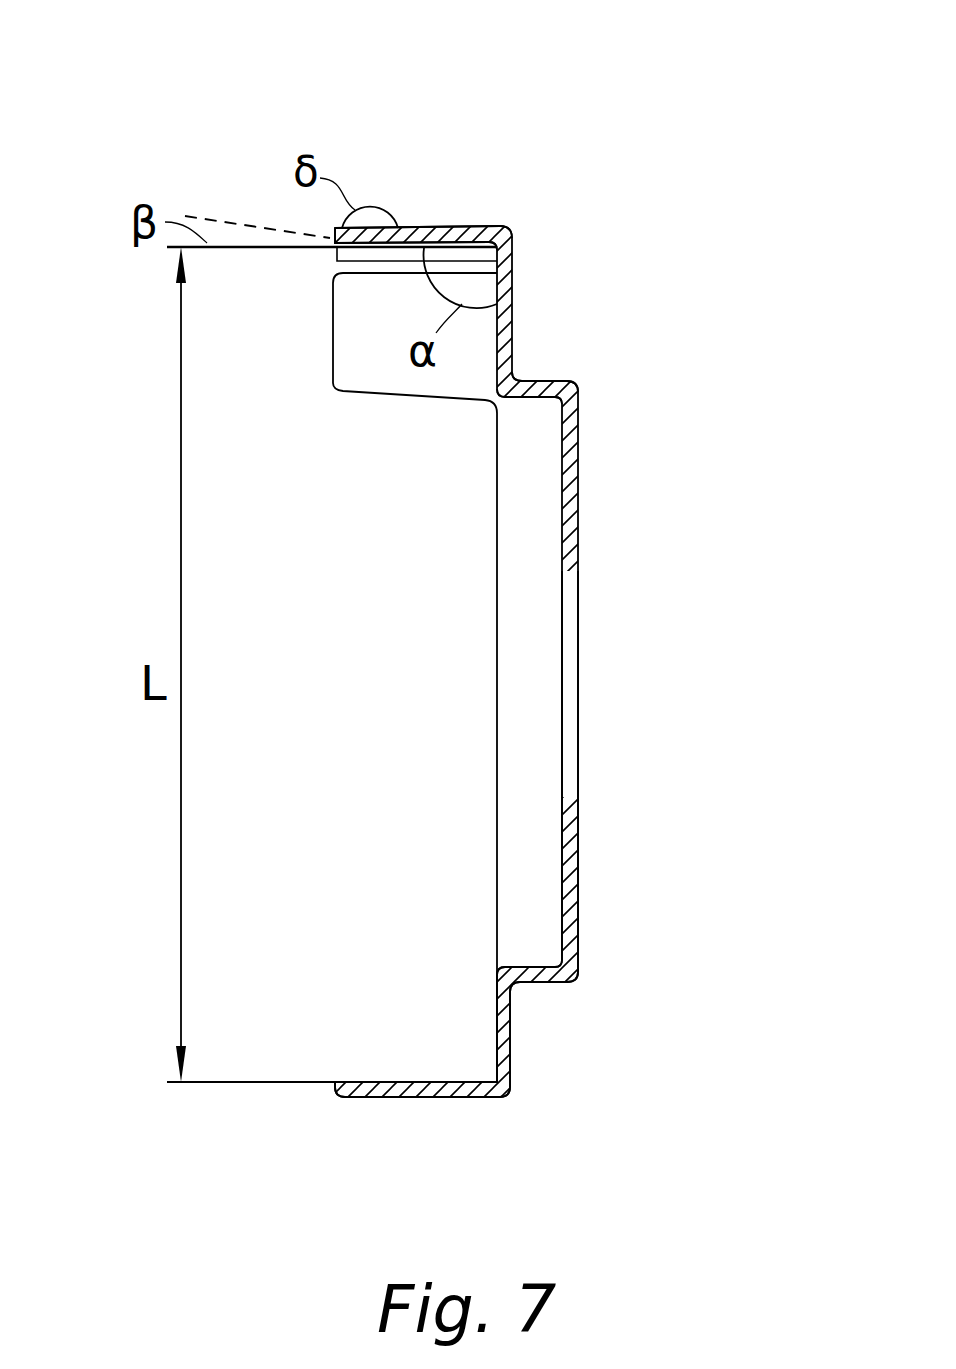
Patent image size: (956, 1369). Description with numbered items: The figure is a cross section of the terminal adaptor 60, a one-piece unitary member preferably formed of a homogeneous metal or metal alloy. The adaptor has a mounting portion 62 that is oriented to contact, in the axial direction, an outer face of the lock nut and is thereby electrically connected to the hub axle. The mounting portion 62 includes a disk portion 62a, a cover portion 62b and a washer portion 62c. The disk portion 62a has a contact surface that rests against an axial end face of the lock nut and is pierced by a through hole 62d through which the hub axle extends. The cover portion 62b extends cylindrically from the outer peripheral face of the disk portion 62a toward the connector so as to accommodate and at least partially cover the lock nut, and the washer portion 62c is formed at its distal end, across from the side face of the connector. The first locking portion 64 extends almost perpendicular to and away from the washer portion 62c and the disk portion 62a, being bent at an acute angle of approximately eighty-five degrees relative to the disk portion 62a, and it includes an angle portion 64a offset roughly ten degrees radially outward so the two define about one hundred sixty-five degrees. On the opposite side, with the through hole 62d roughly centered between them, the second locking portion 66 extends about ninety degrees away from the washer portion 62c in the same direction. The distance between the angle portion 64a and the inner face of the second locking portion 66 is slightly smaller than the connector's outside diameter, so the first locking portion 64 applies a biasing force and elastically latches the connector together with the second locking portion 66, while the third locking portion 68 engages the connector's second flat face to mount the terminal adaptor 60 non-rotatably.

The terminal adaptor 60 is at (461, 570).
The mounting portion 62 is at (582, 938).
The disk portion 62a is at (572, 856).
The cover portion 62b is at (540, 982).
The washer portion 62c is at (512, 347).
The through hole 62d is at (568, 795).
The first locking portion 64 is at (411, 216).
The angle portion 64a is at (333, 262).
The second locking portion 66 is at (390, 1082).
The third locking portion 68 is at (380, 330).